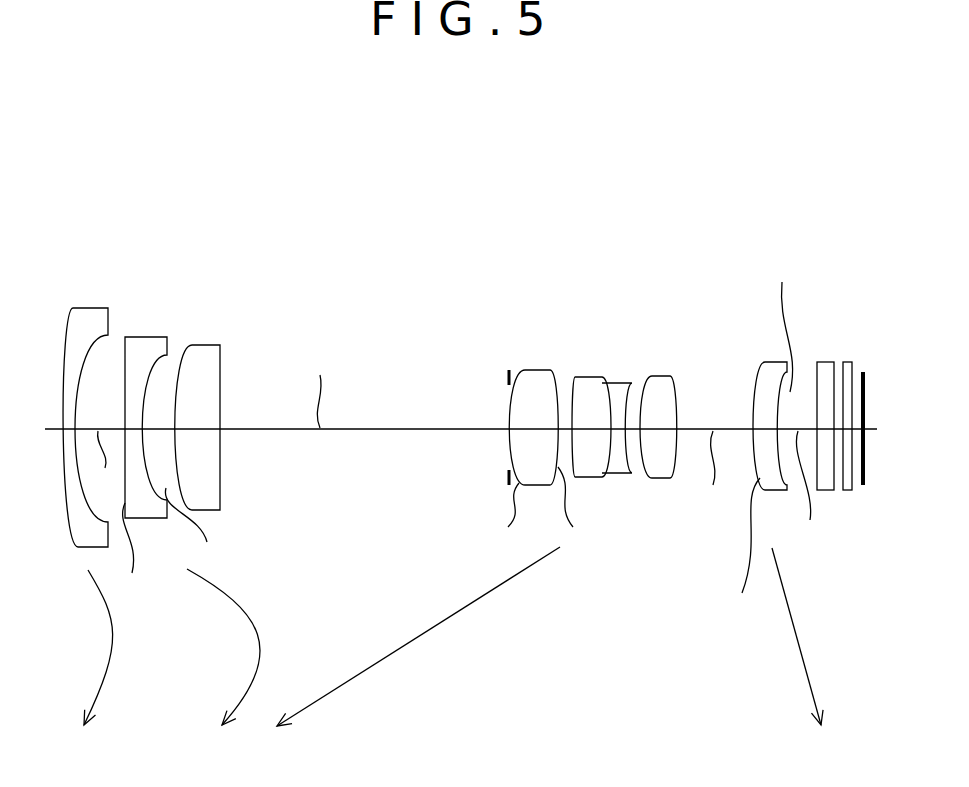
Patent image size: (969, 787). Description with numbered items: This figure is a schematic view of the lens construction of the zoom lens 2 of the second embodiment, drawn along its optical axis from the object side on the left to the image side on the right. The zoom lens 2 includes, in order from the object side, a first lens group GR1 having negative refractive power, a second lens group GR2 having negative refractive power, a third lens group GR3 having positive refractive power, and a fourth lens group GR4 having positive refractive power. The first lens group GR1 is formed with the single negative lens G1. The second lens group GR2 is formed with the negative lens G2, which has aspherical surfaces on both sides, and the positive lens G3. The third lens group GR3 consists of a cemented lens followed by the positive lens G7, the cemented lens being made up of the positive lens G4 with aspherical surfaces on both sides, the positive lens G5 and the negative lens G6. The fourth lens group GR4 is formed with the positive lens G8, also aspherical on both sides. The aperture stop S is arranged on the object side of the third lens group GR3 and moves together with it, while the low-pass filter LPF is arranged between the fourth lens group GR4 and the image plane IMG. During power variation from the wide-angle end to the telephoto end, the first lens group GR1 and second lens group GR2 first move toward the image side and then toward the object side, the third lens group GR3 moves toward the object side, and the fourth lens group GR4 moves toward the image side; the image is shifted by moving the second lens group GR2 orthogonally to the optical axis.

The zoom lens 2 is at (389, 244).
The first lens group GR1 is at (108, 250).
The second lens group GR2 is at (223, 250).
The third lens group GR3 is at (622, 250).
The fourth lens group GR4 is at (735, 250).
The negative lens G1 is at (92, 307).
The negative lens G2 is at (150, 337).
The positive lens G3 is at (205, 345).
The positive lens G4 is at (538, 370).
The positive lens G5 is at (590, 377).
The negative lens G6 is at (615, 383).
The positive lens G7 is at (663, 376).
The positive lens G8 is at (774, 362).
The aperture stop S is at (508, 380).
The low-pass filter LPF is at (848, 362).
The image plane IMG is at (863, 372).